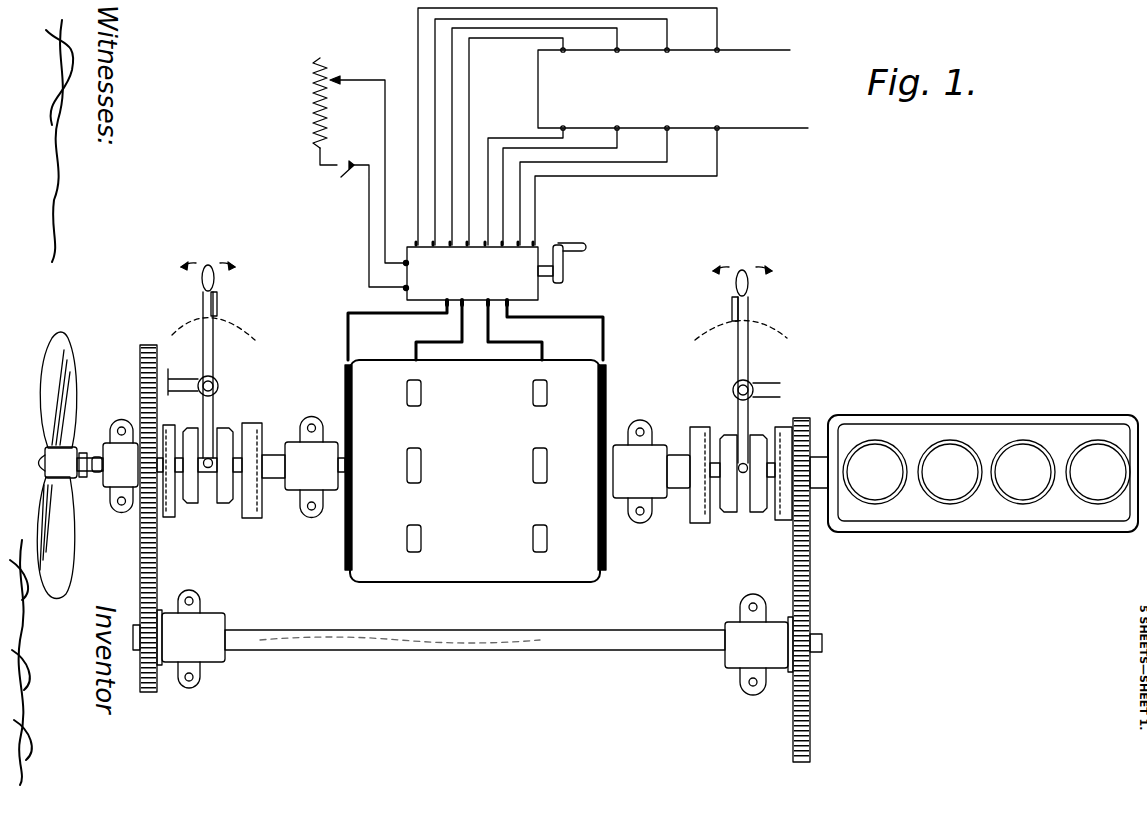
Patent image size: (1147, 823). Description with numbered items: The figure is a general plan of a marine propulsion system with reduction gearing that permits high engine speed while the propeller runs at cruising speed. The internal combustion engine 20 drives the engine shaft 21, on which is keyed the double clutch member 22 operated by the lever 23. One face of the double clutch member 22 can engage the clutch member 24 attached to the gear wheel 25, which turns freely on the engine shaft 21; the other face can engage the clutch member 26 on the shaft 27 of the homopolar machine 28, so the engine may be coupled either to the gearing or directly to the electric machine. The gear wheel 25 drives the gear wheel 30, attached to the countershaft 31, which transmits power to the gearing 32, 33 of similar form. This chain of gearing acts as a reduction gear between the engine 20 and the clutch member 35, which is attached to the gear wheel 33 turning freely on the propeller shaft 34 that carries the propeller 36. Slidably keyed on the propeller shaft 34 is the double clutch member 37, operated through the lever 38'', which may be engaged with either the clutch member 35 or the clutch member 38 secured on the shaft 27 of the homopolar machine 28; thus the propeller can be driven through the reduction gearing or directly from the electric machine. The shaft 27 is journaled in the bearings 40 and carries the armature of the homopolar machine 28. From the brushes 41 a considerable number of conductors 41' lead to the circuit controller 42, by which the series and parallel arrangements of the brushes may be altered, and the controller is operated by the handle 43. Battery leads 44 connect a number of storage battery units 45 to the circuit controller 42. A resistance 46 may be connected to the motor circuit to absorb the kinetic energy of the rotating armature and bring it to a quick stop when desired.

The internal combustion engine 20 is at (1018, 433).
The engine shaft 21 is at (718, 457).
The double clutch member 22 is at (752, 447).
The lever 23 is at (750, 286).
The clutch member 24 is at (785, 505).
The gear wheel 25 is at (810, 512).
The clutch member 26 is at (695, 505).
The shaft 27 is at (233, 447).
The homopolar machine 28 is at (475, 471).
The gear wheel 30 is at (810, 735).
The countershaft 31 is at (515, 650).
The gearing 32 is at (157, 590).
The gear wheel 33 is at (140, 558).
The propeller shaft 34 is at (86, 447).
The clutch member 35 is at (165, 508).
The propeller 36 is at (62, 345).
The double clutch member 37 is at (222, 440).
The clutch member 38 is at (281, 453).
The lever 38'' is at (213, 340).
The bearings 40 is at (310, 478).
The brushes 41 is at (478, 350).
The conductors 41' is at (499, 317).
The circuit controller 42 is at (520, 263).
The handle 43 is at (584, 247).
The battery leads 44 is at (452, 49).
The storage battery units 45 is at (740, 108).
The resistance 46 is at (318, 80).